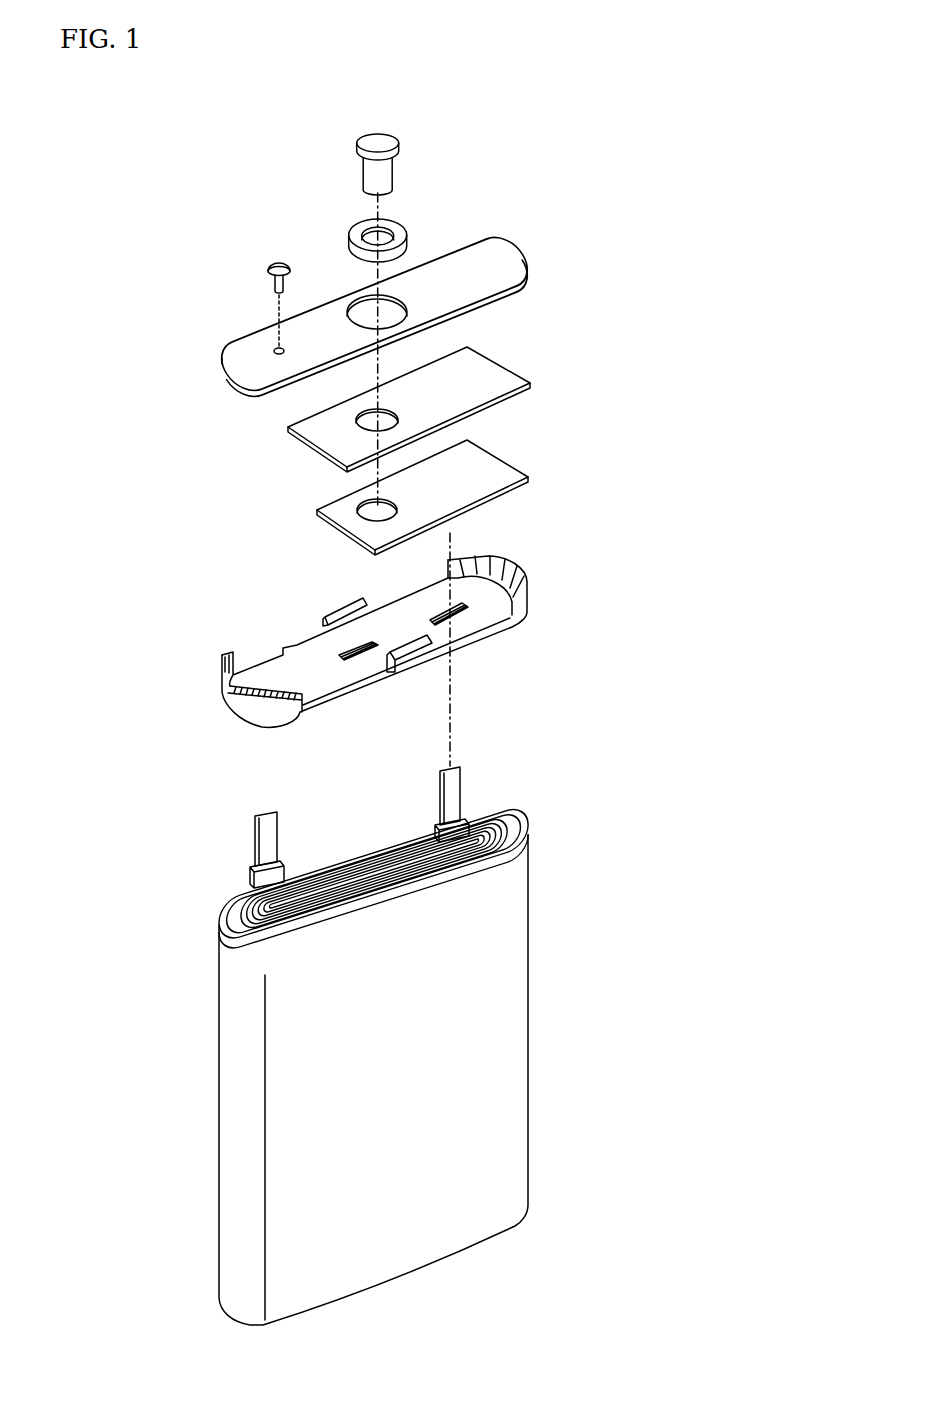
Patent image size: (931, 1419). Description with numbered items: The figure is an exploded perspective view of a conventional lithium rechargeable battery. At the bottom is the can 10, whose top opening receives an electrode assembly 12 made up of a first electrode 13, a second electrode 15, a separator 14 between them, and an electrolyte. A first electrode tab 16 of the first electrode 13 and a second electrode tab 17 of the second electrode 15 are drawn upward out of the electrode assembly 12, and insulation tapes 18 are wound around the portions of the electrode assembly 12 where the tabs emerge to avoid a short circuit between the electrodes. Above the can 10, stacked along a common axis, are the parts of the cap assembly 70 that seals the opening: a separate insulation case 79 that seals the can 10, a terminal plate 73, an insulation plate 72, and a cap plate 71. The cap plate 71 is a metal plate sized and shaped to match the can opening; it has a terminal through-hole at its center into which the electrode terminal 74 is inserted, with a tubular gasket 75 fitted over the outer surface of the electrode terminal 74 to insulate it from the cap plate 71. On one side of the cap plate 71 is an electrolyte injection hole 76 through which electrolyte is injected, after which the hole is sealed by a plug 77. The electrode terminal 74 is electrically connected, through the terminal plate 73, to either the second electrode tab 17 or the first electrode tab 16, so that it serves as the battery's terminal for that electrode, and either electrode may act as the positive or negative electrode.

The can 10 is at (500, 996).
The electrode assembly 12 is at (570, 755).
The first electrode 13 is at (510, 815).
The separator 14 is at (502, 805).
The second electrode 15 is at (485, 800).
The first electrode tab 16 is at (254, 846).
The second electrode tab 17 is at (444, 796).
The insulation tape 18 is at (251, 886).
The cap assembly 70 is at (170, 218).
The cap plate 71 is at (250, 362).
The insulation plate 72 is at (292, 430).
The terminal plate 73 is at (320, 506).
The electrode terminal 74 is at (370, 134).
The gasket 75 is at (352, 227).
The electrolyte injection hole 76 is at (275, 348).
The plug 77 is at (278, 262).
The insulation case 79 is at (277, 642).